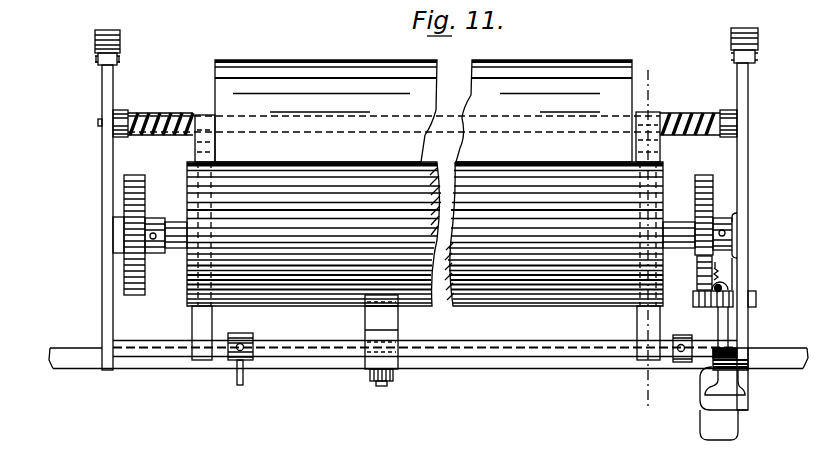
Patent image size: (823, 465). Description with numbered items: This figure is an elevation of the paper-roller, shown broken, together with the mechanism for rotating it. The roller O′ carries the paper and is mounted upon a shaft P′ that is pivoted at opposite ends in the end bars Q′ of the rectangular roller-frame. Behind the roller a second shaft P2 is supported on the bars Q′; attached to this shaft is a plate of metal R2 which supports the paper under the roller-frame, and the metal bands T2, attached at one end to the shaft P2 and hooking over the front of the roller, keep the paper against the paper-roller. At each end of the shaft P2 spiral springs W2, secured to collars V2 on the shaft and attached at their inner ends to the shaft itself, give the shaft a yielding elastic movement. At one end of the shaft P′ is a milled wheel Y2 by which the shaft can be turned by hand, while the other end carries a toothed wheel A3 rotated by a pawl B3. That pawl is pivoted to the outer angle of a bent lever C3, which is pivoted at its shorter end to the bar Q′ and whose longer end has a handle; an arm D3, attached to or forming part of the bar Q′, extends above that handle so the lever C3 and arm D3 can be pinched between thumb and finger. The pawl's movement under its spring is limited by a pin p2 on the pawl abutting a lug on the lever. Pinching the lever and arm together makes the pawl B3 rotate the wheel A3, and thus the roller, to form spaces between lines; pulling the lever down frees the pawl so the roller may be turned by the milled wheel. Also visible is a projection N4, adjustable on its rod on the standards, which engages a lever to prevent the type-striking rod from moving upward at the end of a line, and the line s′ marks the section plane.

The end bar Q′ is at (102, 154).
The collar V2 is at (556, 383).
The spiral spring W2 is at (424, 109).
The shaft P2 is at (148, 110).
The milled wheel Y2 is at (171, 237).
The metal band T2 is at (188, 147).
The shaft P′ is at (177, 222).
The plate of metal R2 is at (423, 111).
The roller O′ is at (425, 234).
The projection N4 is at (248, 362).
The center line s′ is at (648, 244).
The toothed wheel A3 is at (712, 190).
The pawl B3 is at (712, 262).
The pin p2 is at (694, 290).
The arm D3 is at (750, 395).
The bent lever C3 is at (738, 430).